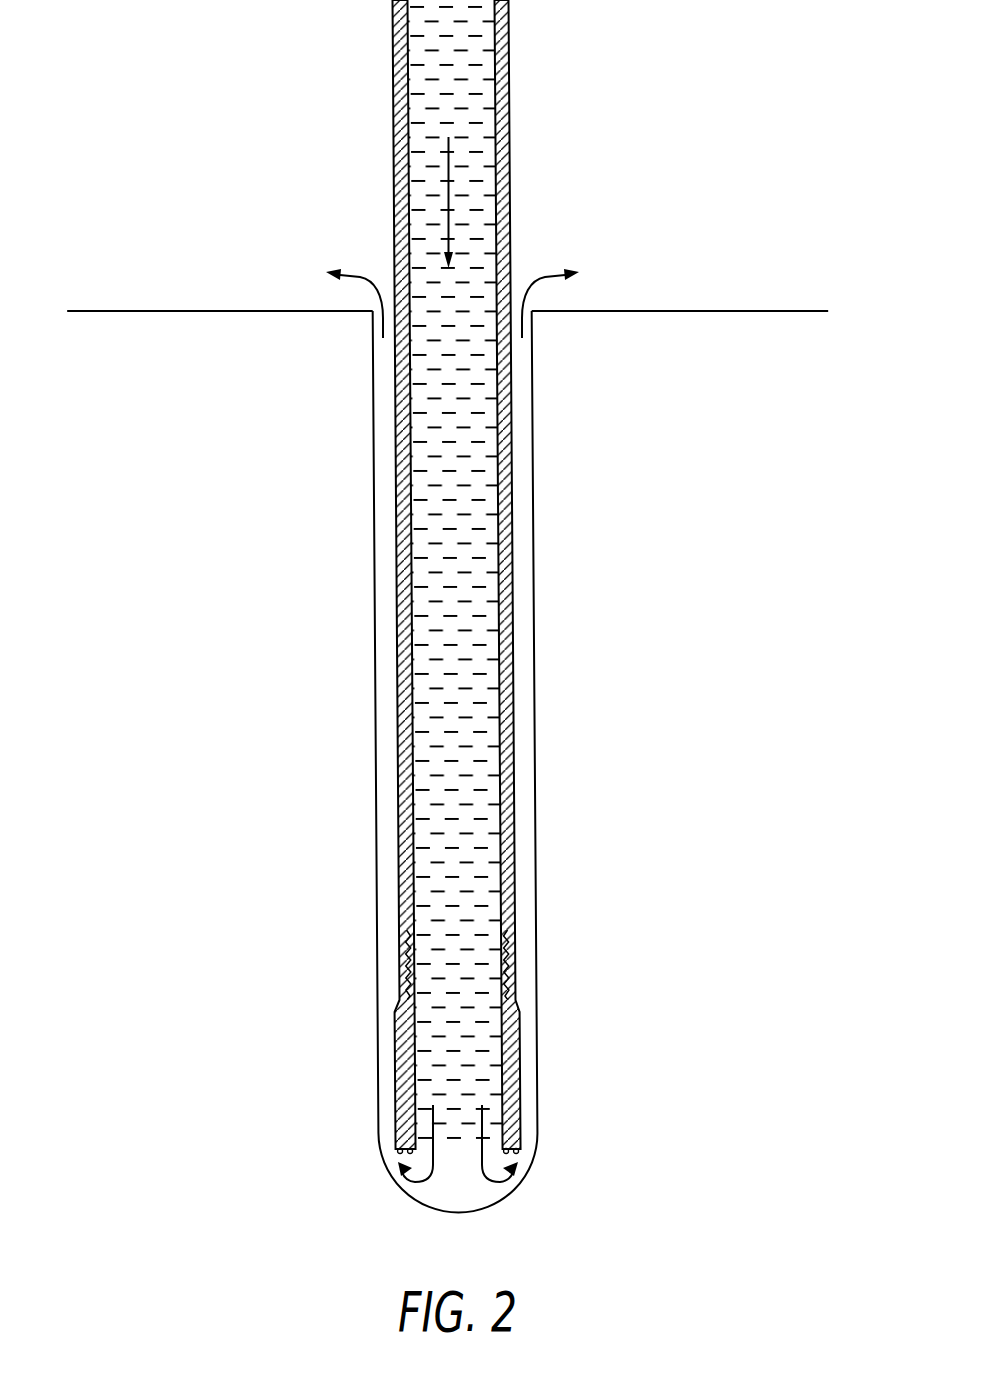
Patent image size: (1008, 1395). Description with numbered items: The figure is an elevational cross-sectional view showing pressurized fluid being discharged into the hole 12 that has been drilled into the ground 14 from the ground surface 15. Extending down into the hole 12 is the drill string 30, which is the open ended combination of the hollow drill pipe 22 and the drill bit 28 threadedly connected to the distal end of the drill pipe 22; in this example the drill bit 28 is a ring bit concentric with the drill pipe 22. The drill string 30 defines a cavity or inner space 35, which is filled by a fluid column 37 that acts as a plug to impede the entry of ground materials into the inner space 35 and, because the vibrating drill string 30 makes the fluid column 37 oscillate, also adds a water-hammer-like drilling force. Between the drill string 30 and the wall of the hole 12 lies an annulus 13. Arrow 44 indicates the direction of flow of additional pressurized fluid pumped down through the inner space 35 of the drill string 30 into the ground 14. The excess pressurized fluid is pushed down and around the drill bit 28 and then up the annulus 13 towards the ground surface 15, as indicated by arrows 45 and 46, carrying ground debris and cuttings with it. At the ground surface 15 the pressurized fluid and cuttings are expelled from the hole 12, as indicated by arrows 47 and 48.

The hole 12 is at (358, 513).
The annulus 13 is at (525, 708).
The ground 14 is at (205, 380).
The ground surface 15 is at (273, 311).
The drill pipe 22 is at (500, 182).
The drill bit 28 is at (518, 1090).
The drill string 30 is at (525, 522).
The inner space 35 is at (470, 455).
The fluid column 37 is at (473, 625).
The arrow 44 is at (448, 170).
The arrow 45 is at (433, 1184).
The arrow 46 is at (483, 1184).
The arrow 47 is at (531, 285).
The arrow 48 is at (374, 282).